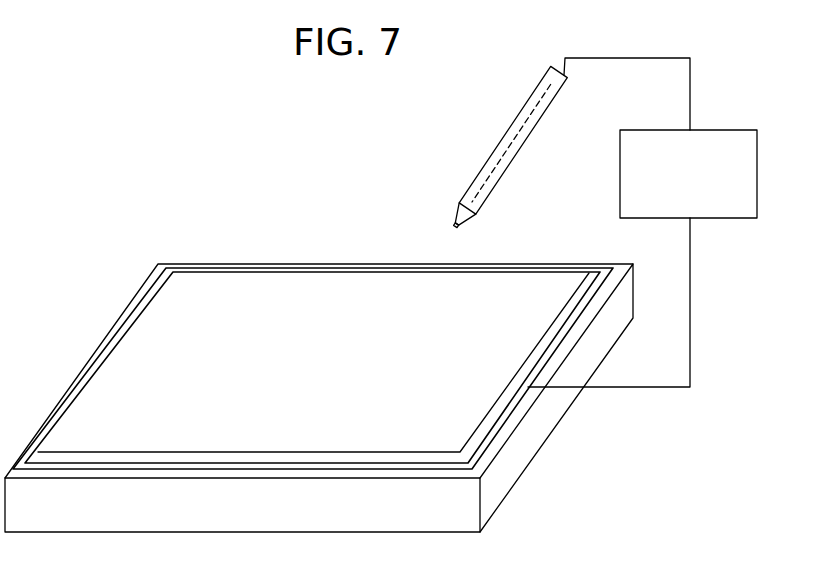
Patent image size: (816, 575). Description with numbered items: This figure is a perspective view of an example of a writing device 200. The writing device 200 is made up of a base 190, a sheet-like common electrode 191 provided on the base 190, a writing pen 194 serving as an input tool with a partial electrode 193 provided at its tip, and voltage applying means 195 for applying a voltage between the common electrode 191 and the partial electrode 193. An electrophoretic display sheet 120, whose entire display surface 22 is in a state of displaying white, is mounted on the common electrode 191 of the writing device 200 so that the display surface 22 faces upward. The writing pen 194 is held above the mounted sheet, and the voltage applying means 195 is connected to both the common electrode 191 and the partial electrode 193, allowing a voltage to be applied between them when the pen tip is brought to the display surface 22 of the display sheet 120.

The writing device 200 is at (147, 168).
The base 190 is at (498, 486).
The common electrode 191 is at (497, 417).
The electrophoretic display sheet 120 is at (105, 349).
The display surface 22 is at (244, 280).
The partial electrode 193 is at (451, 225).
The writing pen 194 is at (512, 122).
The voltage applying means 195 is at (717, 130).